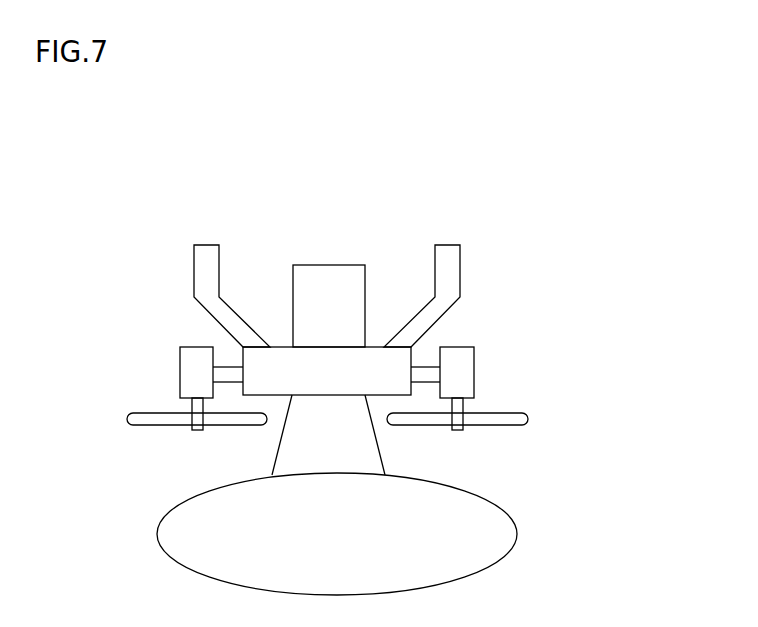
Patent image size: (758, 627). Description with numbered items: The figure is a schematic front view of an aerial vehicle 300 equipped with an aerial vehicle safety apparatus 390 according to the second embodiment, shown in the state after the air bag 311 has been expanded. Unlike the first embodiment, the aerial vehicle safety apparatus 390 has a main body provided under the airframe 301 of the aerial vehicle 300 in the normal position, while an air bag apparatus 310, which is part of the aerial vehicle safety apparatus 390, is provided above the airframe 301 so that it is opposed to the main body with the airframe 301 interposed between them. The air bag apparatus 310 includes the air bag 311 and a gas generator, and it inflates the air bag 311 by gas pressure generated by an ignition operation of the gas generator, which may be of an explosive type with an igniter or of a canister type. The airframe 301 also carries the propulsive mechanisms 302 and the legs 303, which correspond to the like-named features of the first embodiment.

The aerial vehicle 300 is at (257, 220).
The airframe 301 is at (390, 365).
The propulsive mechanism 302 is at (153, 420).
The leg 303 is at (210, 252).
The air bag apparatus 310 is at (517, 545).
The air bag 311 is at (232, 563).
The aerial vehicle safety apparatus 390 is at (332, 250).